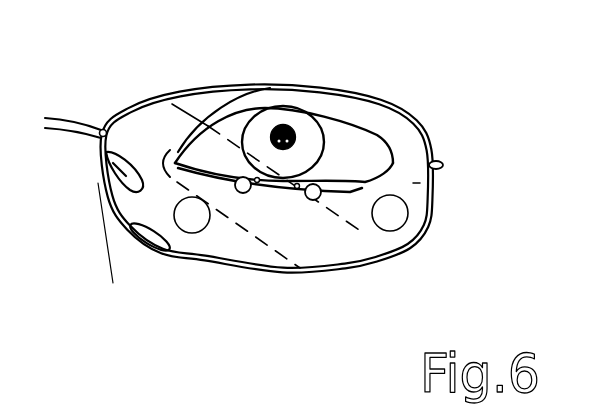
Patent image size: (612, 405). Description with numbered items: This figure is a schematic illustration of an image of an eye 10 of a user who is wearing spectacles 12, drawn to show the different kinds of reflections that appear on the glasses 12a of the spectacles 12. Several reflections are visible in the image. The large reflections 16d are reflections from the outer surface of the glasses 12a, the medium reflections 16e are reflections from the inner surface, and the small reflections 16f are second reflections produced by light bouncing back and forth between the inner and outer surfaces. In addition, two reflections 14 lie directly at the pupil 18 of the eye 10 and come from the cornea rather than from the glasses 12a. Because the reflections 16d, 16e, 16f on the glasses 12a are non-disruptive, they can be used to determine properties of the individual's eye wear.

The eye 10 is at (335, 143).
The spectacles 12 is at (418, 118).
The glasses 12a is at (413, 183).
The reflections 14 is at (277, 127).
The large reflections 16d is at (190, 218).
The medium reflections 16e is at (243, 193).
The small reflections 16f is at (297, 189).
The pupil 18 is at (285, 122).